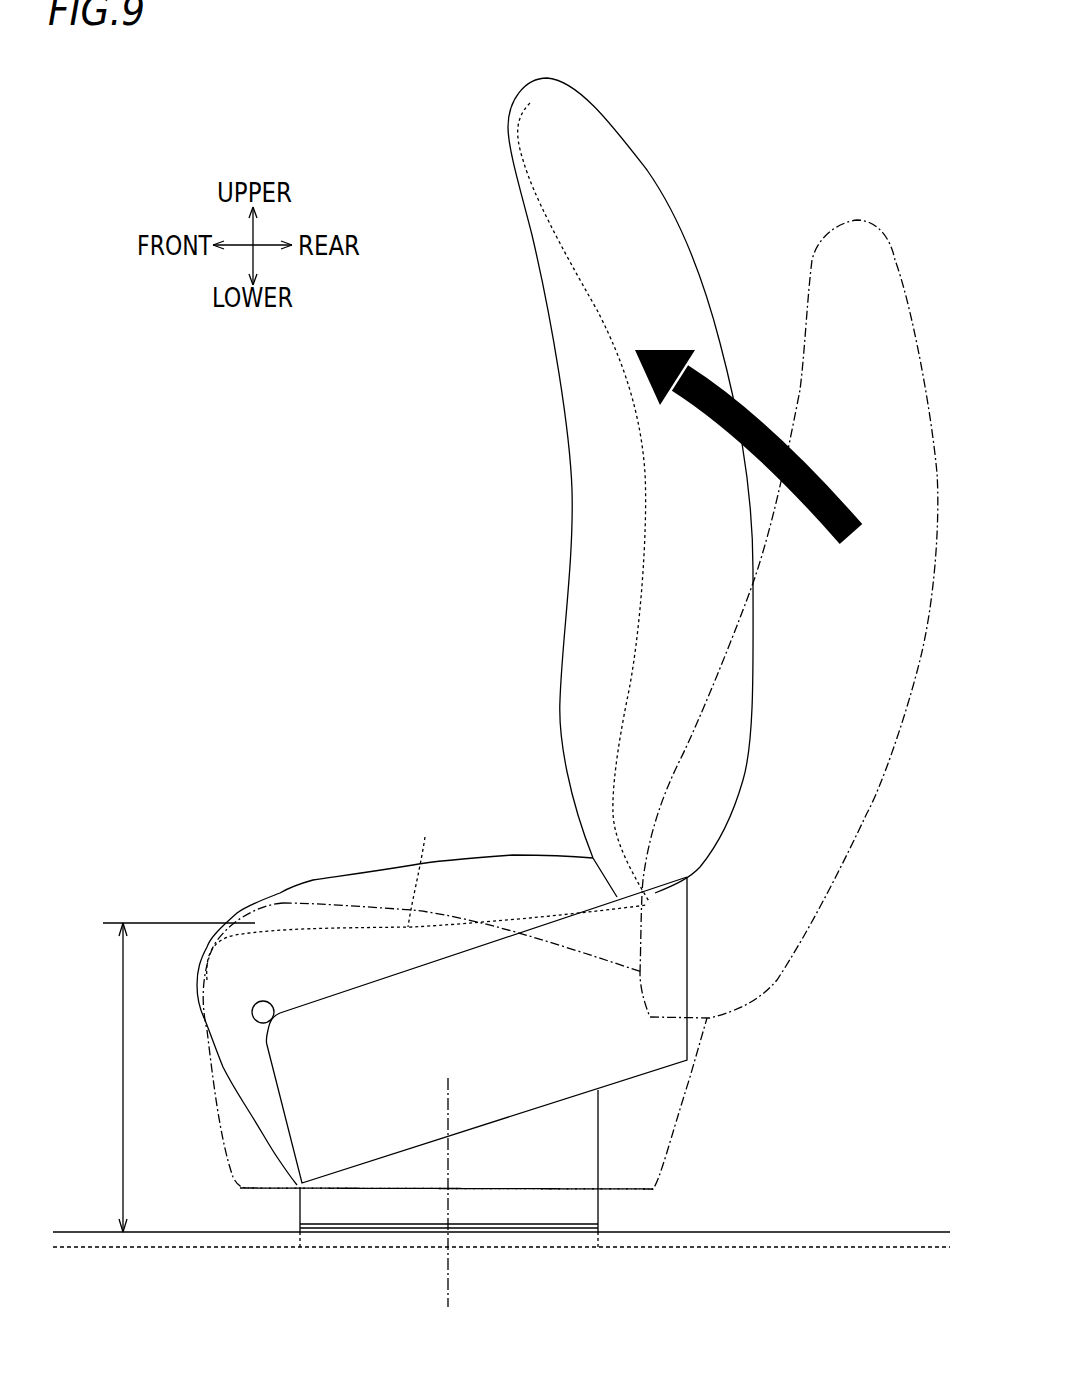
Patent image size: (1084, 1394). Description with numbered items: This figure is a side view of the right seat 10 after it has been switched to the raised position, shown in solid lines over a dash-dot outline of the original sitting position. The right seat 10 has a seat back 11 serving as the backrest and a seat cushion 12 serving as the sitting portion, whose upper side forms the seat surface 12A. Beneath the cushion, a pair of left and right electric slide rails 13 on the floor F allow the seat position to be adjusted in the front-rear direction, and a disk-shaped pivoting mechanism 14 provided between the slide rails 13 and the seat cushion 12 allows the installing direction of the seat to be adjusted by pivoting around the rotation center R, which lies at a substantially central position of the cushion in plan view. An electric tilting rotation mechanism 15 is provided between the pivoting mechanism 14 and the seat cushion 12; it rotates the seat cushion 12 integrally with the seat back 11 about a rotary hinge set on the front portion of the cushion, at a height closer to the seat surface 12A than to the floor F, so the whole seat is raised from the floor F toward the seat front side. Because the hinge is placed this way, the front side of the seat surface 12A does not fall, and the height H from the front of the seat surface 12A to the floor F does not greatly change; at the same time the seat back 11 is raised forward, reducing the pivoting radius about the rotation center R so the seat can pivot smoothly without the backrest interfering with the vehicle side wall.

The right seat 10 is at (628, 160).
The seat back 11 is at (593, 505).
The seat cushion 12 is at (497, 875).
The seat surface 12A is at (425, 867).
The electric slide rails 13 is at (570, 1238).
The pivoting mechanism 14 is at (577, 1207).
The tilting rotation mechanism 15 is at (263, 1001).
The rotation center R is at (450, 1110).
The height H is at (176, 1077).
The floor F is at (813, 1232).